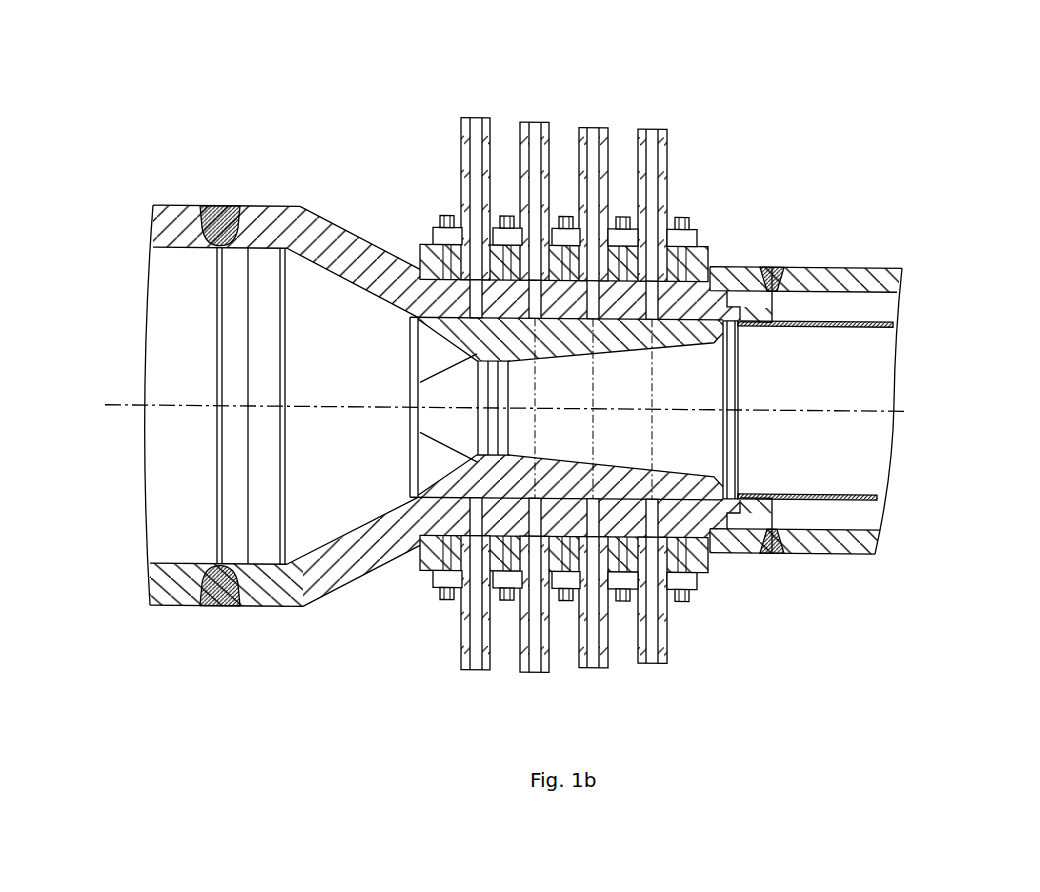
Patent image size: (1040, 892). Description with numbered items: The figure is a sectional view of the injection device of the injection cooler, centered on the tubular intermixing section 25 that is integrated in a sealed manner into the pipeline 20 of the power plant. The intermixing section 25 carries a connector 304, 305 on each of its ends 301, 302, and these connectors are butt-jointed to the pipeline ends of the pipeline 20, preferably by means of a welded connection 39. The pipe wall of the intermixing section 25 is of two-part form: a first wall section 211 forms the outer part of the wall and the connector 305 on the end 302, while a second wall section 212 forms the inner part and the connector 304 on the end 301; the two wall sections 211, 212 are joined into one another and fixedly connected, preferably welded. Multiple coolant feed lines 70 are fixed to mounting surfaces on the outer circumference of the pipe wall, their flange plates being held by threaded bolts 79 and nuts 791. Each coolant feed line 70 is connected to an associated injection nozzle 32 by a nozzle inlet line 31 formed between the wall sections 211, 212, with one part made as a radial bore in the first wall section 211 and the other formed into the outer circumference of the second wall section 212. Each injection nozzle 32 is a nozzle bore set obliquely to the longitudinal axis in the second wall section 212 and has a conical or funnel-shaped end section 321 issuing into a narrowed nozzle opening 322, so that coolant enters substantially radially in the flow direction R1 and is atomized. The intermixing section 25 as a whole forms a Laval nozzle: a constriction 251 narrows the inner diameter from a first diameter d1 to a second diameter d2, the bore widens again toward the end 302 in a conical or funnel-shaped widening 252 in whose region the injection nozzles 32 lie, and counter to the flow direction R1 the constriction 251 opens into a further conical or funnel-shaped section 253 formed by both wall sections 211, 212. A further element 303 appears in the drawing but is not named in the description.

The pipeline 20 is at (854, 429).
The tubular intermixing section 25 is at (582, 374).
The nozzle inlet line 31 is at (707, 261).
The injection nozzle 32 is at (417, 384).
The welded connection 39 is at (210, 194).
The coolant feed line 70 is at (660, 130).
The threaded bolt 79 is at (445, 216).
The nut 791 is at (440, 237).
The first wall section 211 is at (747, 326).
The second wall section 212 is at (725, 355).
The constriction 251 is at (490, 457).
The conical or funnel-shaped widening 252 is at (700, 470).
The further conical or funnel-shaped section 253 is at (318, 291).
The end 301 is at (293, 627).
The end 302 is at (753, 578).
The ring 303 is at (227, 292).
The connector 304 is at (253, 607).
The connector 305 is at (820, 557).
The conical or funnel-shaped end section 321 is at (514, 358).
The nozzle opening 322 is at (525, 443).
The first diameter d1 is at (248, 381).
The second diameter d2 is at (478, 448).
The flow direction R1 is at (900, 410).